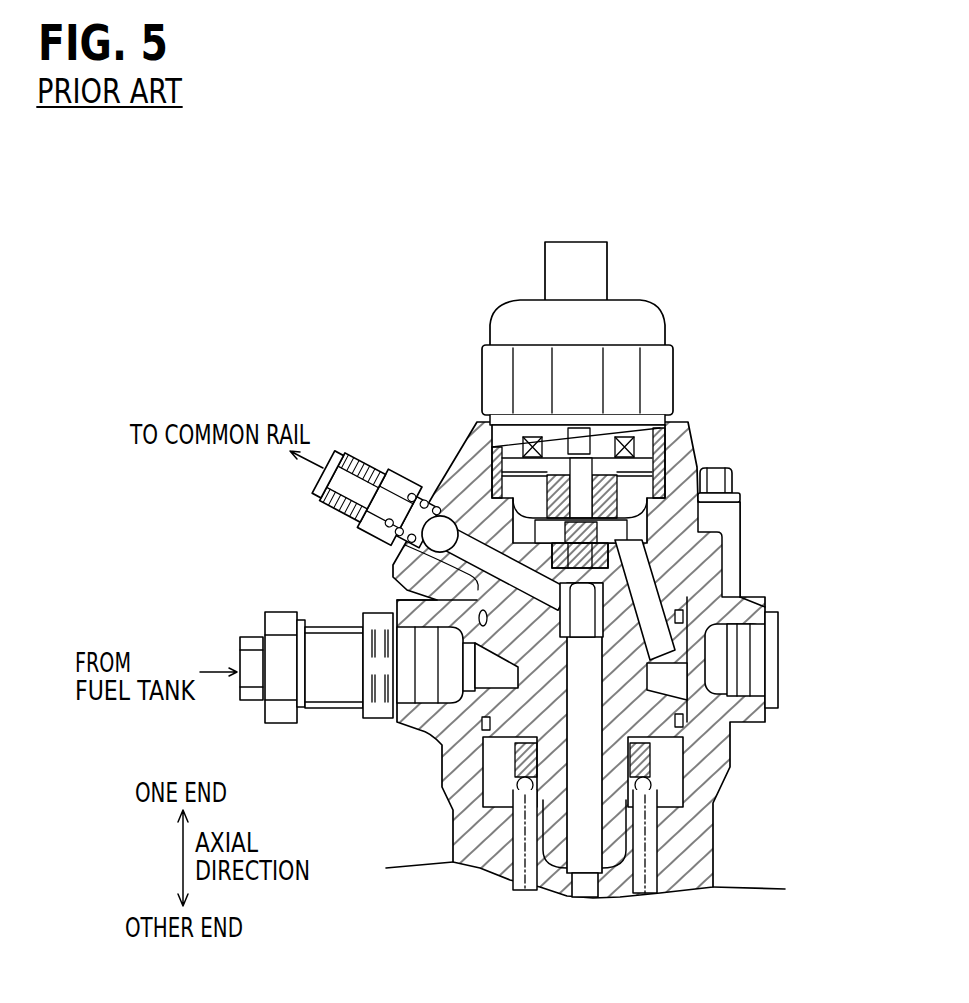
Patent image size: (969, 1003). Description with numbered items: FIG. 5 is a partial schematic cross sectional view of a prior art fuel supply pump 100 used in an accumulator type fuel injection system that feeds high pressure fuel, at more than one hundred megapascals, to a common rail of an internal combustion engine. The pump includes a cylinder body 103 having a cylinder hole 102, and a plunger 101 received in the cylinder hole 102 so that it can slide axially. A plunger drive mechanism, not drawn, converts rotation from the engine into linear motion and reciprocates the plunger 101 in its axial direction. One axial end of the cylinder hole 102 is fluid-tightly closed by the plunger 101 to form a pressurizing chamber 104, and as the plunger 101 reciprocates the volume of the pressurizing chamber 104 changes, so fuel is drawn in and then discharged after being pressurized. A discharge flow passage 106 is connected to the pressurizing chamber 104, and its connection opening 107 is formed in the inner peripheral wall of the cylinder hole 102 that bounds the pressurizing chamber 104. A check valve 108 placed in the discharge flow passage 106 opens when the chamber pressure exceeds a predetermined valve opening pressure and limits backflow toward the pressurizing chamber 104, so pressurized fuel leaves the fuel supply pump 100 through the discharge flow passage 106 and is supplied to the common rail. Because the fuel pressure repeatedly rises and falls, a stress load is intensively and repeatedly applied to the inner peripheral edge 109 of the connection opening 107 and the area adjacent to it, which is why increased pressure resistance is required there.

The fuel supply pump 100 is at (297, 269).
The plunger 101 is at (442, 785).
The cylinder hole 102 is at (592, 736).
The cylinder body 103 is at (727, 575).
The pressurizing chamber 104 is at (720, 532).
The discharge flow passage 106 is at (412, 592).
The connection opening 107 is at (480, 713).
The check valve 108 is at (398, 541).
The inner peripheral edge 109 is at (447, 473).